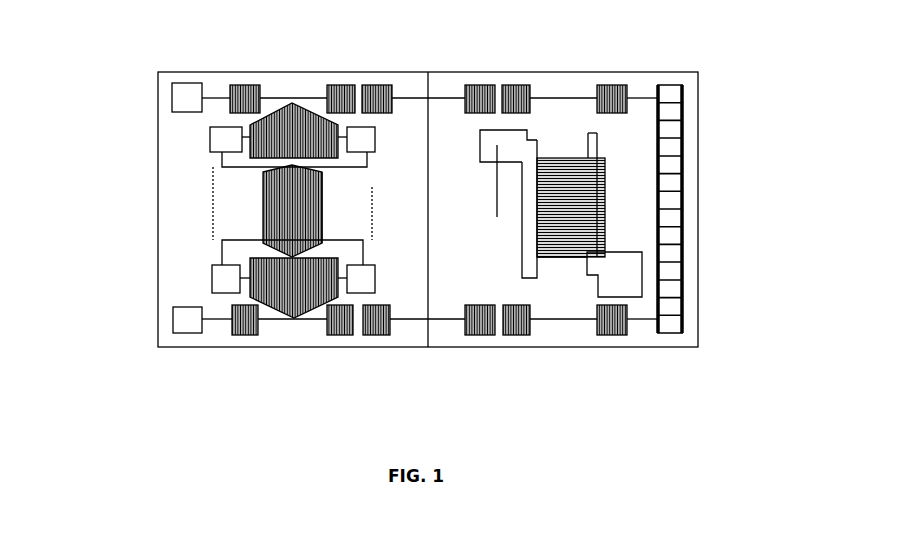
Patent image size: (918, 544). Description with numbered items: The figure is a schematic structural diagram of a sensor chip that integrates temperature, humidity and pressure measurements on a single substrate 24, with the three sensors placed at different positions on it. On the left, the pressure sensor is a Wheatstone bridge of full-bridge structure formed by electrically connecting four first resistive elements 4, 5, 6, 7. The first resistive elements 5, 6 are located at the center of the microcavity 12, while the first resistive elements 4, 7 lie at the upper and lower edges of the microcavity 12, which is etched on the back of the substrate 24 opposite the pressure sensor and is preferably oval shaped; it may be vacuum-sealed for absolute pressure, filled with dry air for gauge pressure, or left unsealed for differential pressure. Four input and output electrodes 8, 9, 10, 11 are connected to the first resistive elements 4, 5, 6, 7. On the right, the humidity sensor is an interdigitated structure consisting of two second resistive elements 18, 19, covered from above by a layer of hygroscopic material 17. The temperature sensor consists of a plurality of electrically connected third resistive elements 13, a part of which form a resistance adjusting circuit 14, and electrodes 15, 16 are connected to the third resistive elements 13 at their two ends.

The first resistive element 4 is at (230, 142).
The first resistive element 5 is at (204, 211).
The first resistive element 6 is at (350, 207).
The first resistive element 7 is at (169, 260).
The input and output electrode 8 is at (168, 128).
The input and output electrode 9 is at (343, 72).
The input and output electrode 10 is at (317, 346).
The input and output electrode 11 is at (225, 284).
The microcavity 12 is at (336, 203).
The third resistive element 13 is at (518, 181).
The resistance adjusting circuit 14 is at (724, 209).
The electrode 15 is at (144, 67).
The electrode 16 is at (139, 347).
The hygroscopic material 17 is at (583, 196).
The second resistive element 18 is at (669, 315).
The second resistive element 19 is at (486, 178).
The substrate 24 is at (660, 374).